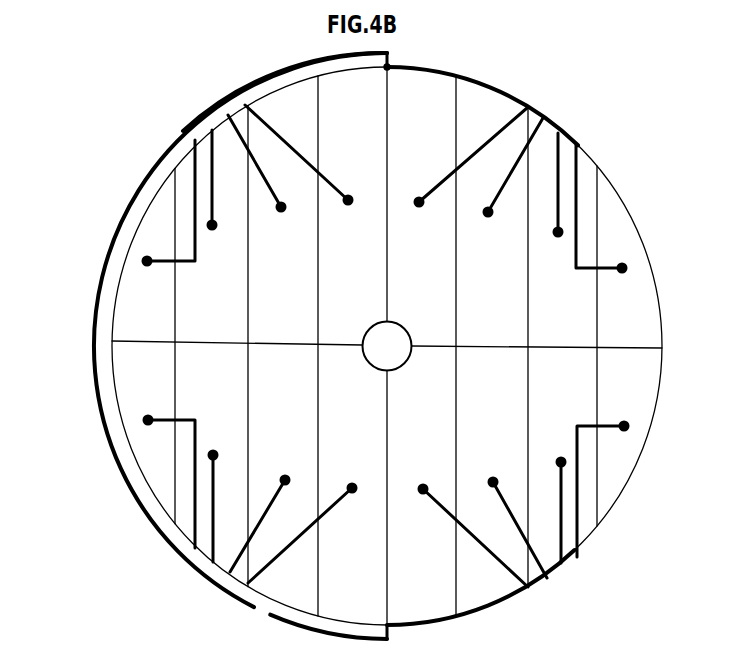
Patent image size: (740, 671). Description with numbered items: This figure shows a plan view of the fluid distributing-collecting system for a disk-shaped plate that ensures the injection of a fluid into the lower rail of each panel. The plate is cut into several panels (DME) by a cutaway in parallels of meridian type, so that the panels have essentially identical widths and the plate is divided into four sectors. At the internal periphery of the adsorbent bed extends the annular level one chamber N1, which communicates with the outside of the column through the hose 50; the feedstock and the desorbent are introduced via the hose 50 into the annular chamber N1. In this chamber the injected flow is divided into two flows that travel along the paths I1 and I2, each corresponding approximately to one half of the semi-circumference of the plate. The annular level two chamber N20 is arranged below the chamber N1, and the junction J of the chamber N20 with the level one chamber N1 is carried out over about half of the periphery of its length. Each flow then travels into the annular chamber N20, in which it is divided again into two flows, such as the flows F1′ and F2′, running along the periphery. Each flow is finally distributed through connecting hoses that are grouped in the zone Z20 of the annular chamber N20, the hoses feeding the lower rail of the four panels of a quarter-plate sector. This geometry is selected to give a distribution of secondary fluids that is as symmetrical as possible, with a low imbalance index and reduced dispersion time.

The hose 50 is at (94, 341).
The path I2 is at (136, 184).
The path I1 is at (148, 522).
The second edge zone F2′ is at (482, 84).
The flow F1′ is at (484, 617).
The junction J is at (391, 58).
The annular level 2 chamber N20 is at (432, 650).
The annular level 1 chamber N1 is at (125, 472).
The zone Z20 is at (595, 563).